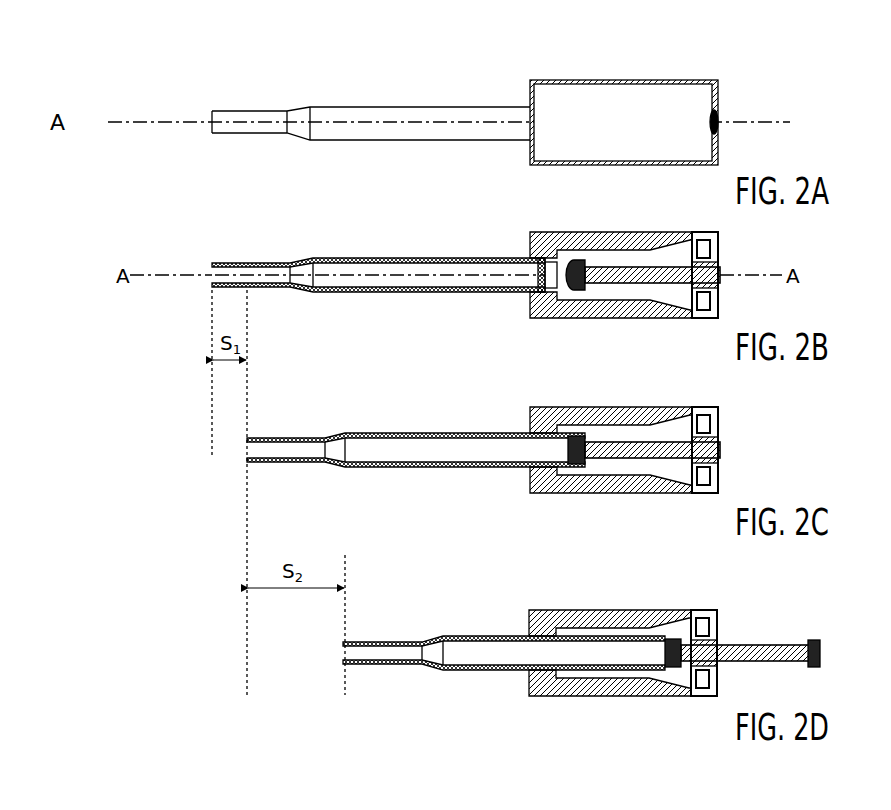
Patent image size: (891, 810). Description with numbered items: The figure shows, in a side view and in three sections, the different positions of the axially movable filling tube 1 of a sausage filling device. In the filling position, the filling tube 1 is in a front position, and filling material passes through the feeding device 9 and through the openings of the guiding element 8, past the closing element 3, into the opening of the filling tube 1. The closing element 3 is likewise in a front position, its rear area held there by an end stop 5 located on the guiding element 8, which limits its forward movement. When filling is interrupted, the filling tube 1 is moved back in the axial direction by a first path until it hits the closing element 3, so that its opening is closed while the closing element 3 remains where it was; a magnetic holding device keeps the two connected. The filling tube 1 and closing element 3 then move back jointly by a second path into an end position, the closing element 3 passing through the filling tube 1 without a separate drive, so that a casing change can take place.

In FIG. 2A, the filling tube 1 is at (378, 52).
In FIG. 2B, the filling tube 1 is at (458, 258).
In FIG. 2C, the filling tube 1 is at (452, 432).
In FIG. 2D, the filling tube 1 is at (597, 650).
In FIG. 2B, the closing element 3 is at (597, 262).
In FIG. 2C, the closing element 3 is at (597, 440).
In FIG. 2D, the closing element 3 is at (760, 645).
In FIG. 2B, the end stop 5 is at (718, 296).
In FIG. 2C, the end stop 5 is at (718, 471).
In FIG. 2D, the end stop 5 is at (717, 674).
In FIG. 2B, the guiding element 8 is at (705, 232).
In FIG. 2C, the guiding element 8 is at (705, 407).
In FIG. 2D, the guiding element 8 is at (705, 610).
In FIG. 2A, the feeding device 9 is at (620, 80).
In FIG. 2B, the feeding device 9 is at (620, 232).
In FIG. 2C, the feeding device 9 is at (620, 407).
In FIG. 2D, the feeding device 9 is at (620, 610).